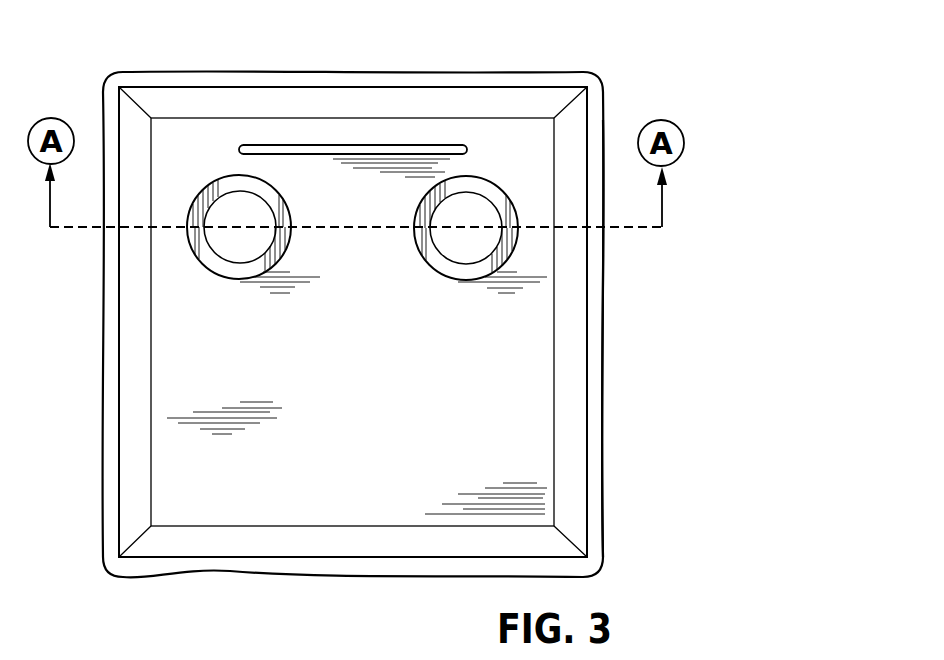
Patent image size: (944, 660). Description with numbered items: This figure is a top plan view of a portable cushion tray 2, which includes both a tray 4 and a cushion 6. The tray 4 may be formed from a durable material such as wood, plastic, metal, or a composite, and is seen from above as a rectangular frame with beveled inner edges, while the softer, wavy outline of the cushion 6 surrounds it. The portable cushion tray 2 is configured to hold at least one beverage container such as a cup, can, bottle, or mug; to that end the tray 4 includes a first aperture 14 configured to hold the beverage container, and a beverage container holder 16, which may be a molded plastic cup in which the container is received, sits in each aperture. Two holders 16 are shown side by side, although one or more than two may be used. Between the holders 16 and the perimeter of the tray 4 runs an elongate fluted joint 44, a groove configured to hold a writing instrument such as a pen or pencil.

The portable cushion tray 2 is at (545, 46).
The tray 4 is at (568, 367).
The cushion 6 is at (598, 427).
The first aperture 14 is at (235, 279).
The beverage container holder 16 is at (274, 258).
The elongate fluted joint 44 is at (353, 147).